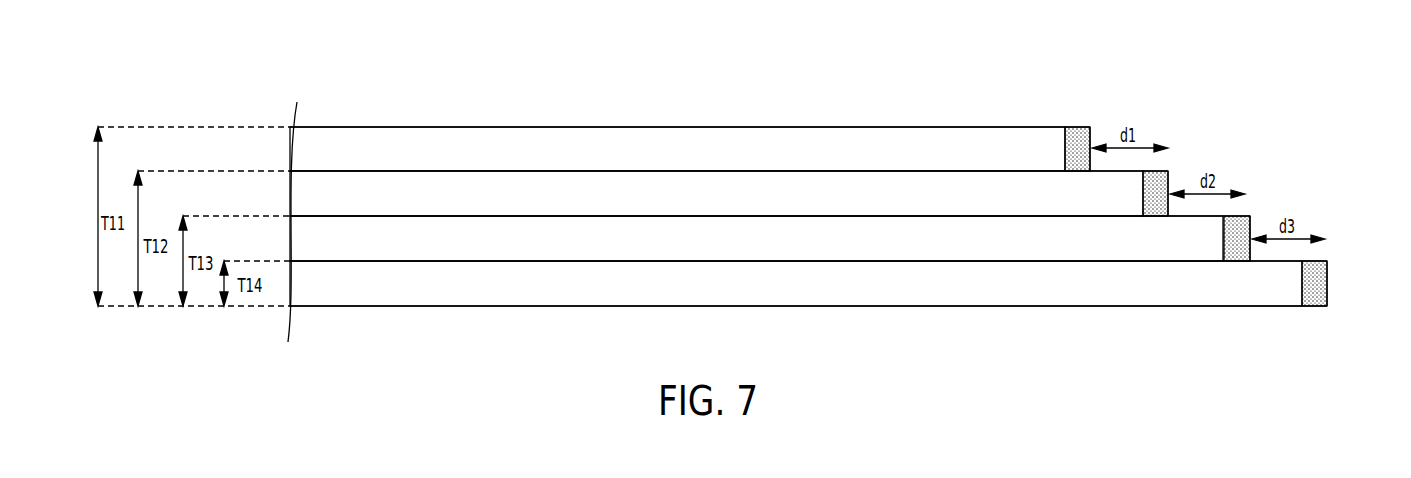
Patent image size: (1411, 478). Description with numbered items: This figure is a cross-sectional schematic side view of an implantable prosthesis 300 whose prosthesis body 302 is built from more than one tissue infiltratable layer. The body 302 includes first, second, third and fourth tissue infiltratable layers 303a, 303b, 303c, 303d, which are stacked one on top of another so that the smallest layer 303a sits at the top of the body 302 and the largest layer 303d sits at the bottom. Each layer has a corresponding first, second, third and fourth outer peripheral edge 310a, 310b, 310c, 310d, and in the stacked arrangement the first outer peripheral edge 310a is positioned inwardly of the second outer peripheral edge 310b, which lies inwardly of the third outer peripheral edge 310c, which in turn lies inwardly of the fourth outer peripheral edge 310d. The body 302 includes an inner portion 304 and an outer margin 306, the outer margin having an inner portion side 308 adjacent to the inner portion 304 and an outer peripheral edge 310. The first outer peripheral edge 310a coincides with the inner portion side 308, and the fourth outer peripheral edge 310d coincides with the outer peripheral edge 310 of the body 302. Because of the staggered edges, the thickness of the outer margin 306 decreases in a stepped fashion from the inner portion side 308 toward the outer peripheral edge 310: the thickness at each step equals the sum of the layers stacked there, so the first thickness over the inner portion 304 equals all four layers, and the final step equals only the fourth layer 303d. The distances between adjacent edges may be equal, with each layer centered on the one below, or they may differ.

The implantable prosthesis 300 is at (1165, 78).
The prosthesis body 302 is at (455, 127).
The inner portion 304 is at (558, 127).
The first tissue infiltratable layer 303a is at (788, 143).
The second tissue infiltratable layer 303b is at (845, 200).
The third tissue infiltratable layer 303c is at (880, 245).
The fourth tissue infiltratable layer 303d is at (927, 298).
The outer margin 306 is at (1272, 102).
The inner portion side 308 is at (1090, 127).
The outer peripheral edge 310 is at (1365, 173).
The first outer peripheral edge 310a is at (1065, 127).
The second outer peripheral edge 310b is at (1168, 171).
The third outer peripheral edge 310c is at (1250, 216).
The fourth outer peripheral edge 310d is at (1327, 261).